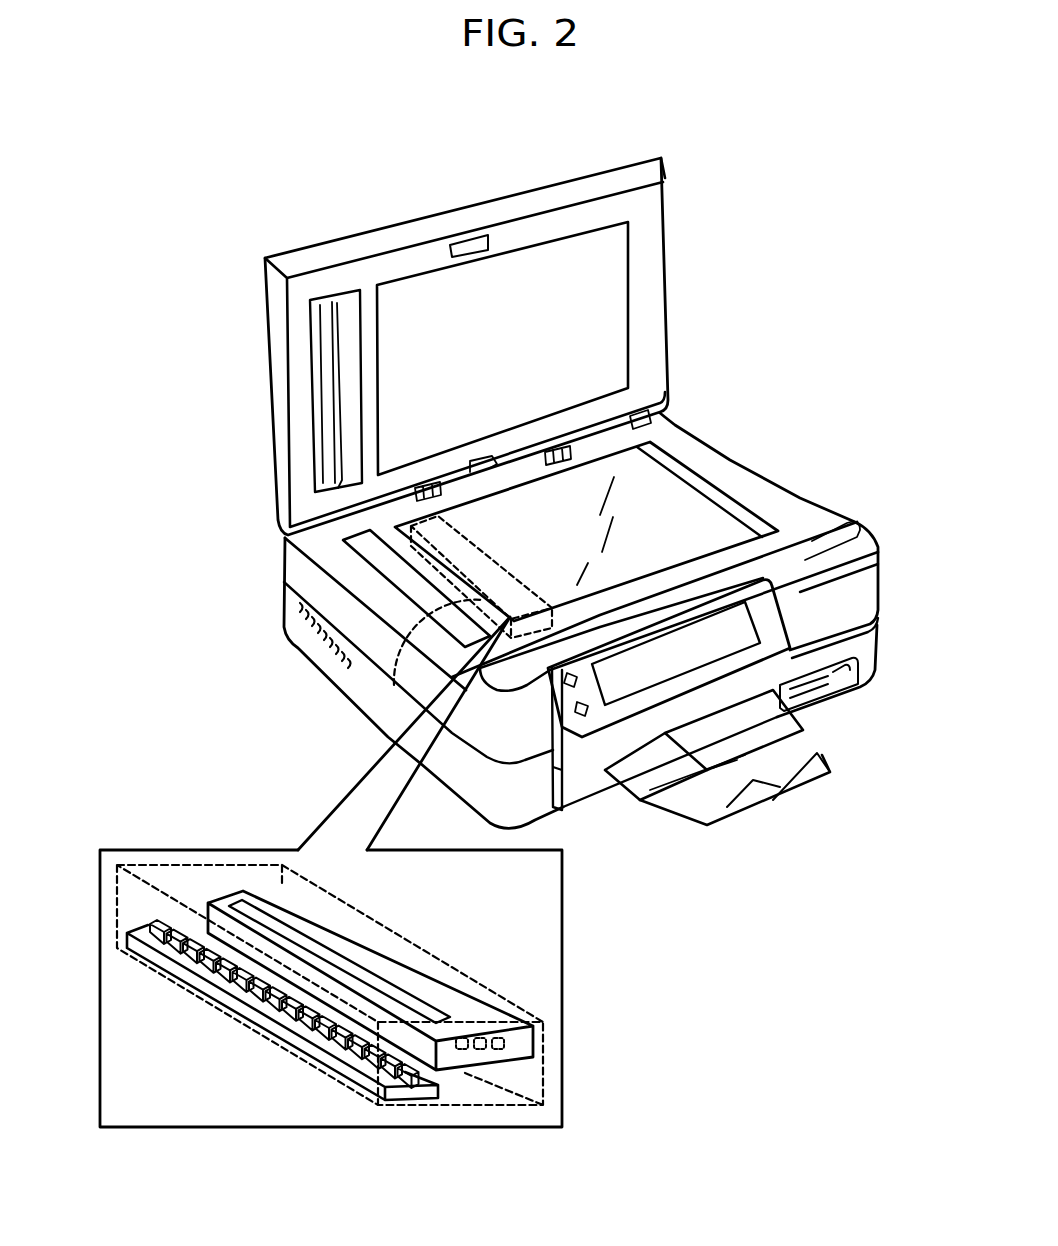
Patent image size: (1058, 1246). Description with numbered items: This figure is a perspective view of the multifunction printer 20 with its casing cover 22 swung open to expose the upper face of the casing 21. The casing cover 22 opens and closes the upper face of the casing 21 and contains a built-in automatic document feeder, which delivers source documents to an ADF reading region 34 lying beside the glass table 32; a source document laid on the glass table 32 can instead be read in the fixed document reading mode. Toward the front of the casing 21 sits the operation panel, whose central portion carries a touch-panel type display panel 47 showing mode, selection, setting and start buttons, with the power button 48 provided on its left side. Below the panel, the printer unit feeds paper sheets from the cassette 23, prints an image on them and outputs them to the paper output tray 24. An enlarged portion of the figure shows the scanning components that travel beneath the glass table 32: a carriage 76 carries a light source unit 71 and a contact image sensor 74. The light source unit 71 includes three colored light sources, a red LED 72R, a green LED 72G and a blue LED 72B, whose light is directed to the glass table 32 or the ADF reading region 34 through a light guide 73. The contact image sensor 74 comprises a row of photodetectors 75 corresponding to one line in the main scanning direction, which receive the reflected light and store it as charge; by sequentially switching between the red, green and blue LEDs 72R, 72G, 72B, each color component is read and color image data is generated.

The multifunction printer 20 is at (228, 213).
The casing 21 is at (795, 497).
The casing cover 22 is at (597, 330).
The cassette 23 is at (570, 795).
The paper output tray 24 is at (666, 767).
The glass table 32 is at (660, 483).
The ADF reading region 34 is at (422, 588).
The display panel 47 is at (727, 640).
The power button 48 is at (566, 682).
The light source unit 71 is at (408, 953).
The red LED 72R is at (461, 1051).
The green LED 72G is at (485, 1051).
The blue LED 72B is at (503, 1051).
The light guide 73 is at (338, 967).
The contact image sensor (CIS) 74 is at (210, 990).
The photodetectors 75 is at (305, 1020).
The carriage 76 is at (374, 697).